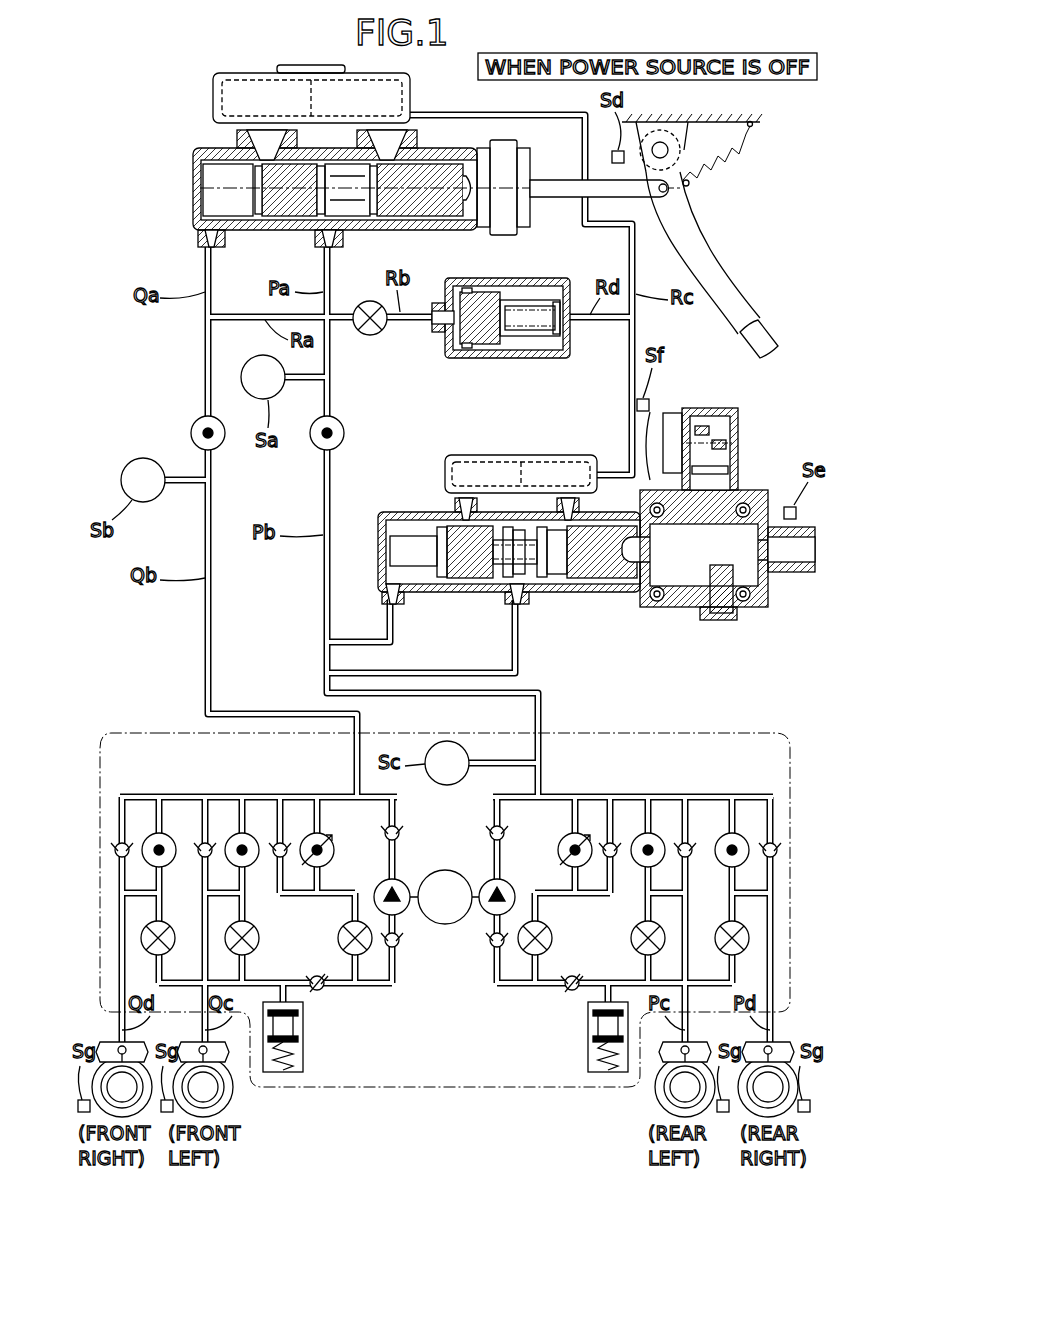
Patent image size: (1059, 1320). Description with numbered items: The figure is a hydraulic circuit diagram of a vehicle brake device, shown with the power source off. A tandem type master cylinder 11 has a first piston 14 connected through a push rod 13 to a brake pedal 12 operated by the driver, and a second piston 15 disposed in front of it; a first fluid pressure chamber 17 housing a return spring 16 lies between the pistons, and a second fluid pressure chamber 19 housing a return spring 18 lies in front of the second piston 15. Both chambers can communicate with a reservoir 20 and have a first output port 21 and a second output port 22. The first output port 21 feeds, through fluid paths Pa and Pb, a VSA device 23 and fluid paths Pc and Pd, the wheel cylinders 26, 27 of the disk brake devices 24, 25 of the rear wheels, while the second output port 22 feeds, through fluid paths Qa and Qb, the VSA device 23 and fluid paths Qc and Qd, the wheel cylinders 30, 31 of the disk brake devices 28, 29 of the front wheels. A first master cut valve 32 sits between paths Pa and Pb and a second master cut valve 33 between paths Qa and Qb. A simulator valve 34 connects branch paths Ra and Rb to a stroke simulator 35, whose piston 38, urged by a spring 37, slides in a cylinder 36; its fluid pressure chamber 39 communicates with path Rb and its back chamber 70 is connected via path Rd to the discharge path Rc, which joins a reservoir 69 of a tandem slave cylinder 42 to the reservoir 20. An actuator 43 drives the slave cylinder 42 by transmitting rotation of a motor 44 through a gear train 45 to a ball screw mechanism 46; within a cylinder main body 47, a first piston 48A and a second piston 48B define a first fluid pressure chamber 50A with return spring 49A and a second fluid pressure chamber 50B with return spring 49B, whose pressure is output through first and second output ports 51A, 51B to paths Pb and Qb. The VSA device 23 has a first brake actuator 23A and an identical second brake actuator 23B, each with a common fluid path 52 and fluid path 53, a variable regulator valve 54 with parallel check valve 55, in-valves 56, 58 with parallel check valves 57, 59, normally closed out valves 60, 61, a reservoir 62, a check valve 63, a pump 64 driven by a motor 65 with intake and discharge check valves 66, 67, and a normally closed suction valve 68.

The master cylinder 11 is at (402, 179).
The brake pedal 12 is at (720, 258).
The push rod 13 is at (545, 182).
The first piston 14 is at (420, 212).
The second piston 15 is at (280, 217).
The return spring 16 is at (371, 217).
The first fluid pressure chamber 17 is at (350, 165).
The return spring 18 is at (195, 210).
The second fluid pressure chamber 19 is at (213, 160).
The reservoir 20 is at (385, 108).
The first output port 21 is at (322, 250).
The second output port 22 is at (198, 250).
The VSA device 23 is at (157, 723).
The first brake actuator 23A is at (790, 874).
The second brake actuator 23B is at (115, 868).
The disk brake device 24 is at (645, 1097).
The disk brake device 25 is at (794, 1034).
The wheel cylinder 26 is at (685, 1079).
The wheel cylinder 27 is at (768, 1079).
The disk brake device 28 is at (247, 1097).
The disk brake device 29 is at (100, 1021).
The wheel cylinder 30 is at (203, 1079).
The wheel cylinder 31 is at (122, 1079).
The first master cut valve 32 is at (318, 447).
The second master cut valve 33 is at (195, 425).
The simulator valve 34 is at (371, 337).
The stroke simulator 35 is at (528, 276).
The cylinder 36 is at (512, 317).
The spring 37 is at (563, 312).
The piston 38 is at (490, 280).
The fluid pressure chamber 39 is at (455, 285).
The slave cylinder 42 is at (576, 532).
The actuator 43 is at (764, 616).
The motor 44 is at (675, 420).
The gear train 45 is at (749, 454).
The ball screw mechanism 46 is at (676, 600).
The cylinder main body 47 is at (565, 590).
The first piston 48A is at (600, 575).
The second piston 48B is at (470, 580).
The return spring 49A is at (575, 525).
The return spring 49B is at (425, 525).
The first fluid pressure chamber 50A is at (525, 603).
The second fluid pressure chamber 50B is at (405, 522).
The first output port 51A is at (505, 605).
The second output port 51B is at (385, 600).
The fluid path 52 is at (265, 795).
The fluid path 53 is at (270, 985).
The regulator valve 54 is at (333, 838).
The check valve 55 is at (286, 842).
The in-valve 56 is at (168, 838).
The check valve 57 is at (128, 842).
The in-valve 58 is at (250, 838).
The check valve 59 is at (210, 842).
The out valve 60 is at (172, 930).
The out valve 61 is at (255, 930).
The reservoir 62 is at (305, 1032).
The check valve 63 is at (326, 990).
The pump 64 is at (405, 885).
The motor 65 is at (445, 925).
The check valve 66 is at (396, 950).
The check valve 67 is at (400, 828).
The suction valve 68 is at (340, 935).
The reservoir 69 is at (540, 472).
The back chamber 70 is at (540, 292).